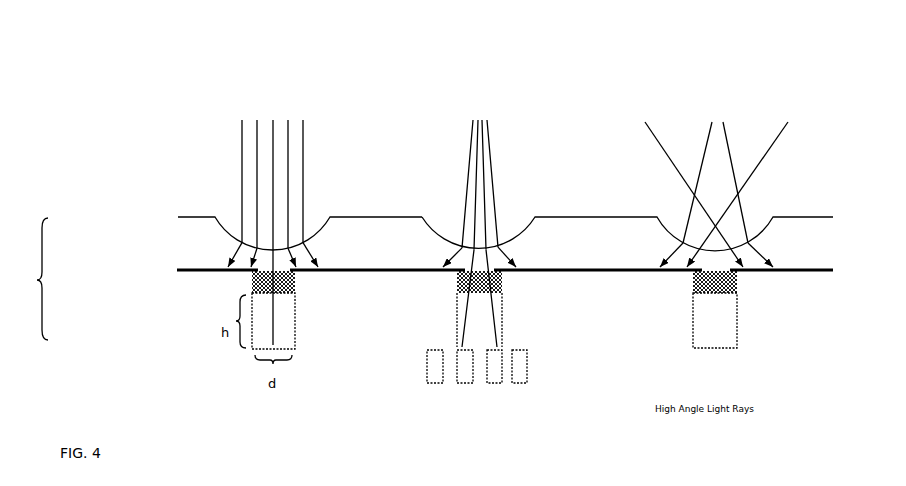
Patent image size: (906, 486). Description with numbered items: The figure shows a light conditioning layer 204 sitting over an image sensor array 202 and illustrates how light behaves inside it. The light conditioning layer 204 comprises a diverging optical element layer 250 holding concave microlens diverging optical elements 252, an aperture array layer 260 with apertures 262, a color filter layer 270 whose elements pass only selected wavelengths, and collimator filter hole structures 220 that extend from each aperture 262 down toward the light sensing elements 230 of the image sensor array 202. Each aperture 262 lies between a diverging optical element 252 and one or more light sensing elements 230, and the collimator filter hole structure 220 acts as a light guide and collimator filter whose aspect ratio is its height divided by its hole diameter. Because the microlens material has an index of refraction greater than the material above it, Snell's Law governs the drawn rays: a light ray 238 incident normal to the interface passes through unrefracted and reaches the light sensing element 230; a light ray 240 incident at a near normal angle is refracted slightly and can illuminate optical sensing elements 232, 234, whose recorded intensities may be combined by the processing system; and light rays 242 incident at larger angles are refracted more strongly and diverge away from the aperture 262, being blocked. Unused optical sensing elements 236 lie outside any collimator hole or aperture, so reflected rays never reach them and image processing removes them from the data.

The light conditioning layer 204 is at (40, 280).
The diverging optical element layer 250 is at (176, 235).
The diverging optical element 252 is at (318, 243).
The aperture array layer 260 is at (176, 270).
The aperture 262 is at (283, 273).
The color filter layer 270 is at (176, 289).
The collimator filter hole structure 220 is at (176, 327).
The light ray incident normal to the interface 238 is at (281, 324).
The image sensor array 202 is at (176, 376).
The unused optical sensing element 236 is at (434, 361).
The optical sensing element 232 is at (461, 378).
The optical sensing element 234 is at (502, 378).
The light sensing element 230 is at (309, 384).
The light rays incident at larger angles 242 is at (497, 196).
The light ray incident at a near normal angle 240 is at (499, 315).